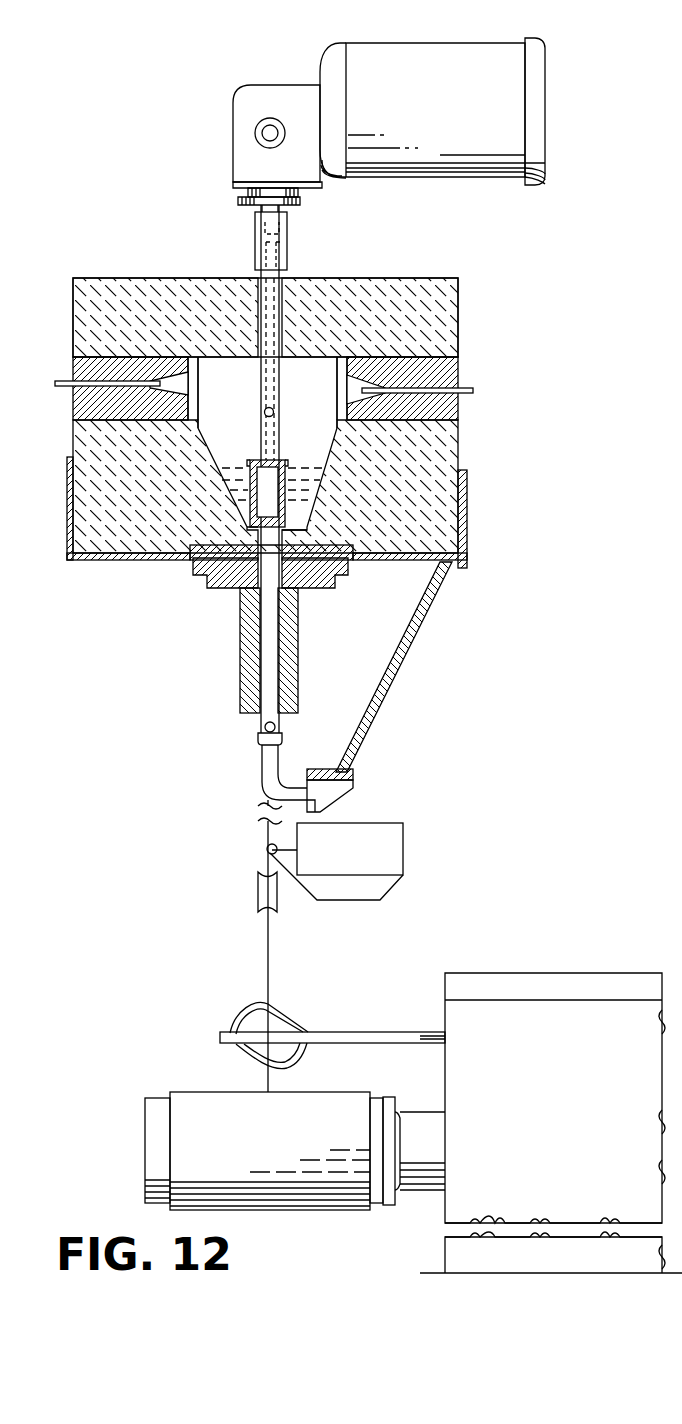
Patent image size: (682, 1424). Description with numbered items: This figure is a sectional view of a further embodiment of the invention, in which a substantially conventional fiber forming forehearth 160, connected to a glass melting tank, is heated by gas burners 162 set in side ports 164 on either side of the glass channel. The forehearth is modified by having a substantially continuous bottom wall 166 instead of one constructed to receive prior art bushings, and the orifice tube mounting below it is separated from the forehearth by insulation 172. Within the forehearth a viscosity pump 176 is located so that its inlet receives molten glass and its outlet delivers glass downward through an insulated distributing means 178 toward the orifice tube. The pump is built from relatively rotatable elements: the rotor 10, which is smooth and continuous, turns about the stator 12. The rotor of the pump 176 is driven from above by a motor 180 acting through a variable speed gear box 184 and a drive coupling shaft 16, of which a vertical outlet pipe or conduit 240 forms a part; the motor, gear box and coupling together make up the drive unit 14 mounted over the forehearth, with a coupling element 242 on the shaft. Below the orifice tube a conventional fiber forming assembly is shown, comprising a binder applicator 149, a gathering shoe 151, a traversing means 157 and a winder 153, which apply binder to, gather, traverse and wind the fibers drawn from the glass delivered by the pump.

The drive motor assembly 14 is at (335, 24).
The drive coupling shaft 16 is at (206, 213).
The motor 180 is at (432, 117).
The variable speed gear box 184 is at (278, 88).
The vertical outlet pipe 240 is at (262, 277).
The fiber forming forehearth 160 is at (470, 348).
The gas burners 162 is at (73, 381).
The side ports 164 is at (178, 385).
The ball coupling 242 is at (276, 412).
The viscosity pump 176 is at (252, 462).
The rotor 10 is at (284, 463).
The stator 12 is at (272, 492).
The bottom wall 166 is at (196, 551).
The insulation 172 is at (222, 575).
The insulated distributing means 178 is at (283, 652).
The binder applicator 149 is at (364, 904).
The gathering shoe 151 is at (256, 895).
The traversing means 157 is at (280, 1022).
The winder 153 is at (205, 1090).